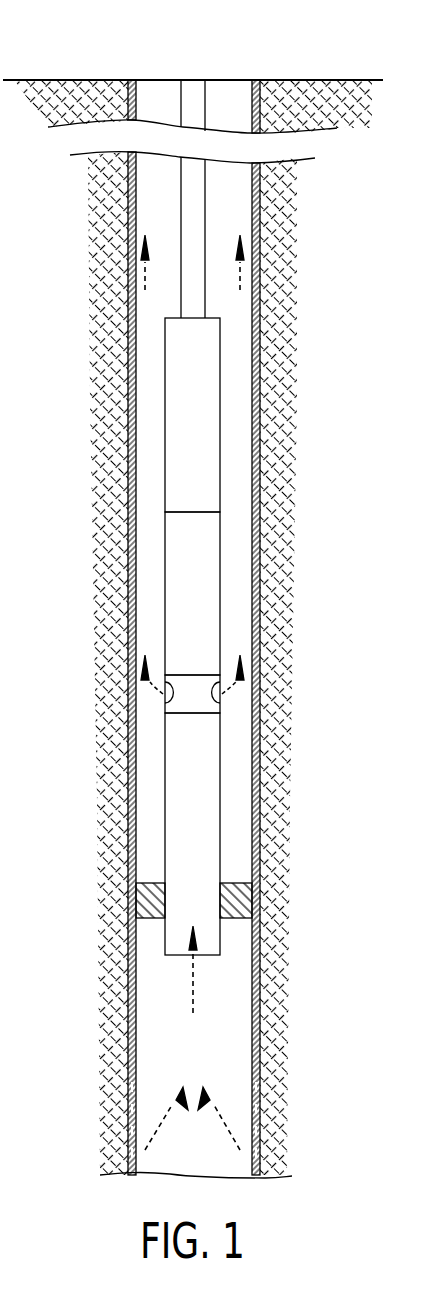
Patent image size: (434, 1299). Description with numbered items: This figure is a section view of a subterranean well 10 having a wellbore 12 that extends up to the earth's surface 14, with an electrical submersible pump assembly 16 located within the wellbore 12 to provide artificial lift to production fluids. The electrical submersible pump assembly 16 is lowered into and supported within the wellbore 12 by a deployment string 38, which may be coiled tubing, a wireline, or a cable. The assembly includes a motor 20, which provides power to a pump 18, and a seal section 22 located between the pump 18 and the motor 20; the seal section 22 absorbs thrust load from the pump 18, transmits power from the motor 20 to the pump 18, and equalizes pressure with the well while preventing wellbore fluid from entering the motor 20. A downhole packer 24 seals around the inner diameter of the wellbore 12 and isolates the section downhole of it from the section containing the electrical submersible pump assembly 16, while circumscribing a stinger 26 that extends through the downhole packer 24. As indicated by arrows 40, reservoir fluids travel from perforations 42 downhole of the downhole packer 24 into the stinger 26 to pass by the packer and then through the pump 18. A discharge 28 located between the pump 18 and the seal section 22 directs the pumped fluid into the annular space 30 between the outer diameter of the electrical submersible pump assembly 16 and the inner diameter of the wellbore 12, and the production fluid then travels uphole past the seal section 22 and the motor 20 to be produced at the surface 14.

The subterranean well 10 is at (322, 460).
The wellbore 12 is at (238, 215).
The earth's surface 14 is at (302, 80).
The electrical submersible pump assembly 16 is at (150, 610).
The pump 18 is at (208, 792).
The motor 20 is at (208, 390).
The seal section 22 is at (208, 600).
The downhole packer 24 is at (240, 905).
The stinger 26 is at (208, 945).
The discharge 28 is at (215, 707).
The annular space 30 is at (148, 740).
The deployment string 38 is at (181, 187).
The arrows 40 is at (225, 1120).
The perforations 42 is at (127, 1118).